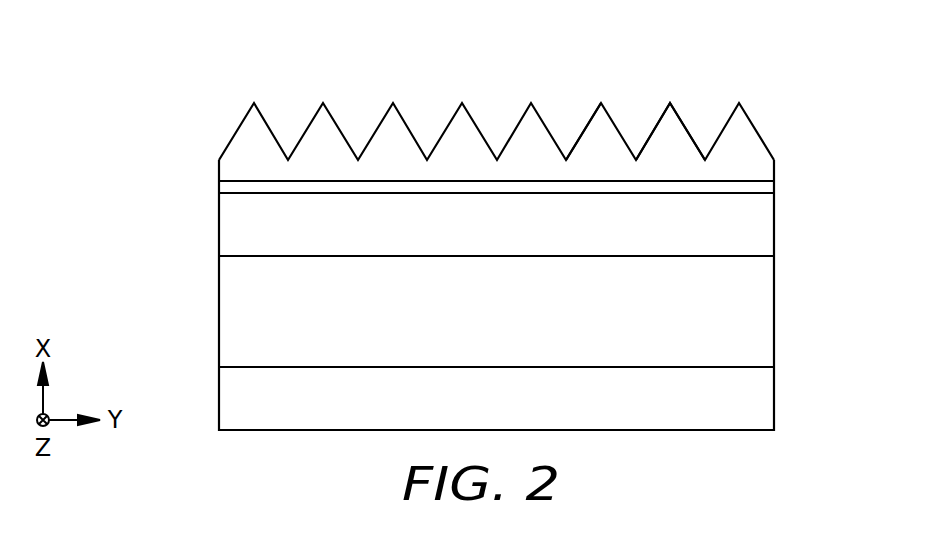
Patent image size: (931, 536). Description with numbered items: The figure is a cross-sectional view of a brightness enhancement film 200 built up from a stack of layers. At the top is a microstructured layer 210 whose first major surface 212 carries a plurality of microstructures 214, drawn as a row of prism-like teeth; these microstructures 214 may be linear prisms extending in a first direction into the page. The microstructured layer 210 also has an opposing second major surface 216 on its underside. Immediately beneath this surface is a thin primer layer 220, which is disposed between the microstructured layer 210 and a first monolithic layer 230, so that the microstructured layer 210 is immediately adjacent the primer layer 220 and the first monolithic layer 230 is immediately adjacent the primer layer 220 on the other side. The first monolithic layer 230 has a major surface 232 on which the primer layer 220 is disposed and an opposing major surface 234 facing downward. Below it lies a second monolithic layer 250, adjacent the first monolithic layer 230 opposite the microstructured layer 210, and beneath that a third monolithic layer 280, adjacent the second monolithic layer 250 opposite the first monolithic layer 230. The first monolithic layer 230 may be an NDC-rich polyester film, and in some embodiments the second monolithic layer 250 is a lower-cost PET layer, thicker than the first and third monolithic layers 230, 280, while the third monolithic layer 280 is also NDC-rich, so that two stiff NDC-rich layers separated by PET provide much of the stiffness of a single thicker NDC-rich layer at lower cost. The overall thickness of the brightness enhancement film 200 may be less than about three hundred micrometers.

The brightness enhancement film 200 is at (238, 58).
The microstructured layer 210 is at (760, 167).
The first major surface 212 is at (682, 120).
The microstructures 214 is at (588, 123).
The second major surface 216 is at (735, 182).
The primer layer 220 is at (227, 187).
The first monolithic layer 230 is at (237, 237).
The major surface 232 is at (252, 195).
The opposing major surface 234 is at (727, 257).
The second monolithic layer 250 is at (237, 313).
The third monolithic layer 280 is at (237, 395).